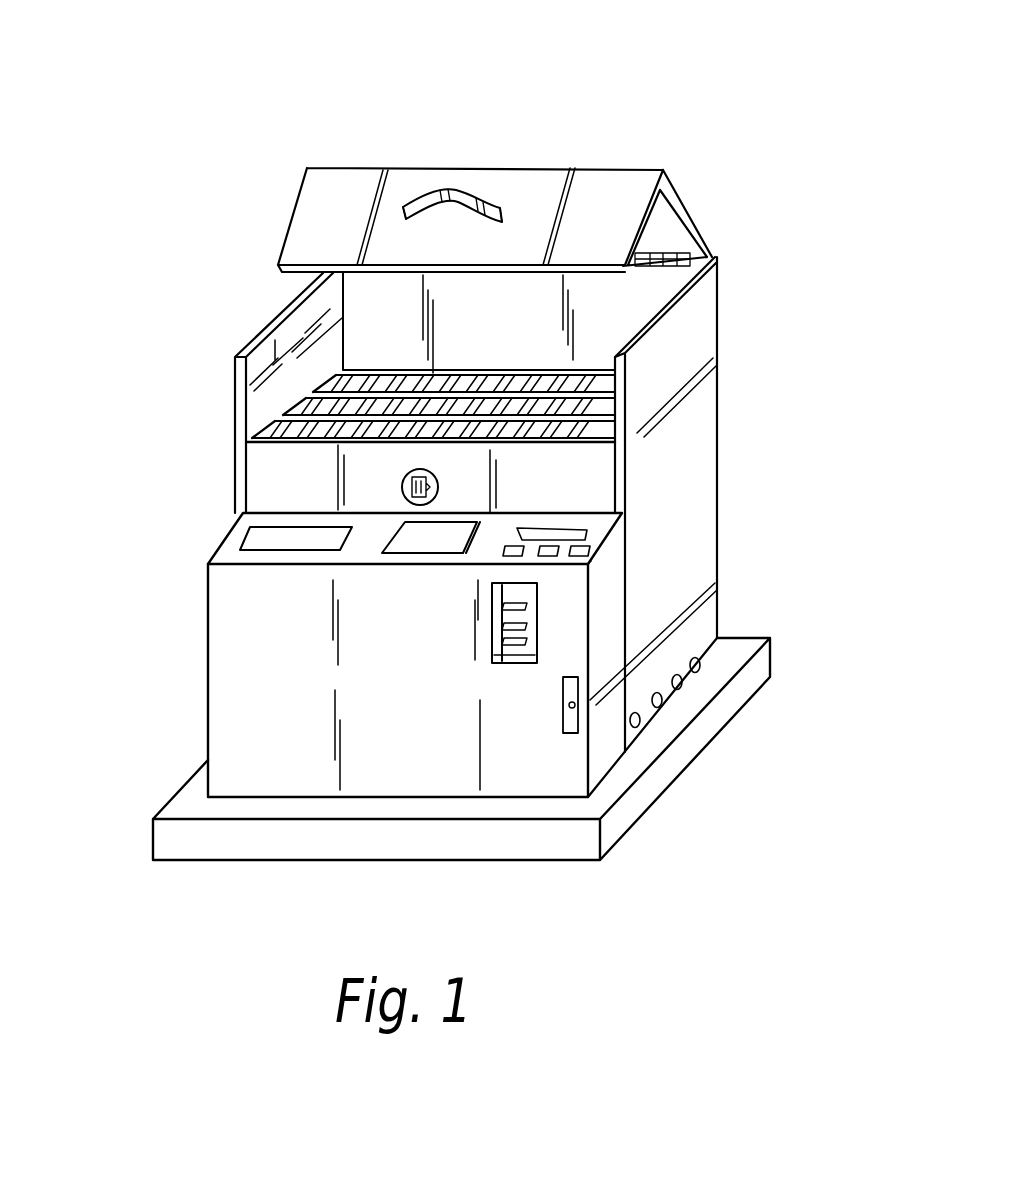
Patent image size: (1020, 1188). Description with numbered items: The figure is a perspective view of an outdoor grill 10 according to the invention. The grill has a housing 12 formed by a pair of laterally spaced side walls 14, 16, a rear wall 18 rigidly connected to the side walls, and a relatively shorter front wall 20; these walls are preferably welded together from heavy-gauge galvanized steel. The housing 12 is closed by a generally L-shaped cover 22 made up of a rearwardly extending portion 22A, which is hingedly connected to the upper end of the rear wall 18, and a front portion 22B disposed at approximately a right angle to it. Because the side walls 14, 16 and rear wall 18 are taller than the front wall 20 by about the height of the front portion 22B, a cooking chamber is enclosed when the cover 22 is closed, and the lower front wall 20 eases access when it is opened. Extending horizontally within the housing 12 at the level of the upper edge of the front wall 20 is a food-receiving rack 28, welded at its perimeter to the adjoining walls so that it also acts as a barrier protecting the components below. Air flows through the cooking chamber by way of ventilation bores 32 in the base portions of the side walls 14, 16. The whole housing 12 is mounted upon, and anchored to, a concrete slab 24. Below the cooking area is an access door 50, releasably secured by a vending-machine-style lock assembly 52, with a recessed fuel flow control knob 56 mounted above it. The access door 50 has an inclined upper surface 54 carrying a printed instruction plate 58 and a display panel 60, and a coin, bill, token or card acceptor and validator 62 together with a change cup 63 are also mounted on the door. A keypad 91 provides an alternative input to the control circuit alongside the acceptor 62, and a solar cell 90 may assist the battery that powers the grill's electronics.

The outdoor grill 10 is at (449, 437).
The housing 12 is at (462, 498).
The side wall 14 is at (235, 373).
The side wall 16 is at (725, 527).
The rear wall 18 is at (413, 288).
The front wall 20 is at (272, 465).
The cover 22 is at (424, 173).
The rearwardly extending portion 22A is at (685, 203).
The front portion 22B is at (308, 207).
The concrete slab 24 is at (178, 839).
The food-receiving rack 28 is at (320, 393).
The ventilation bores 32 is at (640, 723).
The access door 50 is at (416, 717).
The lock assembly 52 is at (566, 736).
The inclined upper surface 54 is at (444, 559).
The fuel flow control knob 56 is at (413, 503).
The printed instruction plate 58 is at (262, 537).
The display panel 60 is at (585, 533).
The acceptor and validator 62 is at (493, 610).
The change cup 63 is at (493, 658).
The solar cell 90 is at (452, 512).
The keypad 91 is at (578, 557).